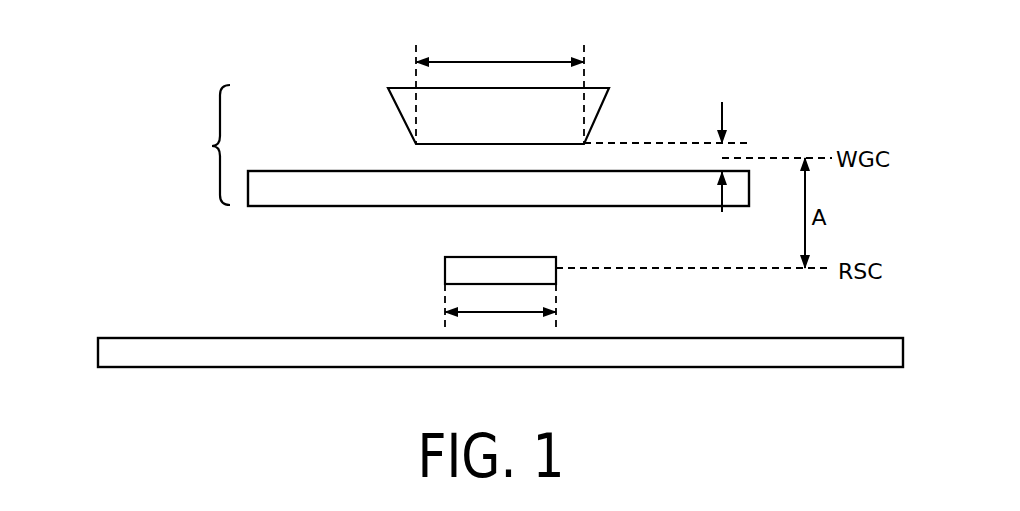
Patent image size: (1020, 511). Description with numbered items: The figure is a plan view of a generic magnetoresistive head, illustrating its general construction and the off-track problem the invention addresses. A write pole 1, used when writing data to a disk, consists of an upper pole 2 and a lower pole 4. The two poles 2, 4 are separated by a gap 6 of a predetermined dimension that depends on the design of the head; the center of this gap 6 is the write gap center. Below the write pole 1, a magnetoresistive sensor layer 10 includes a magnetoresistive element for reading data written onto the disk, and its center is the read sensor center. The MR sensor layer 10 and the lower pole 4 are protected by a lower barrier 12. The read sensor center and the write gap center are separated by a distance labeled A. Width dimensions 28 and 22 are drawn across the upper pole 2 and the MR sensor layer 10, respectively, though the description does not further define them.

The write pole 1 is at (211, 146).
The upper pole 2 is at (606, 97).
The lower pole 4 is at (738, 199).
The gap 6 is at (666, 110).
The magnetoresistive sensor layer 10 is at (445, 268).
The lower barrier 12 is at (98, 352).
The read sensor width 22 is at (500, 306).
The write element width 28 is at (500, 90).